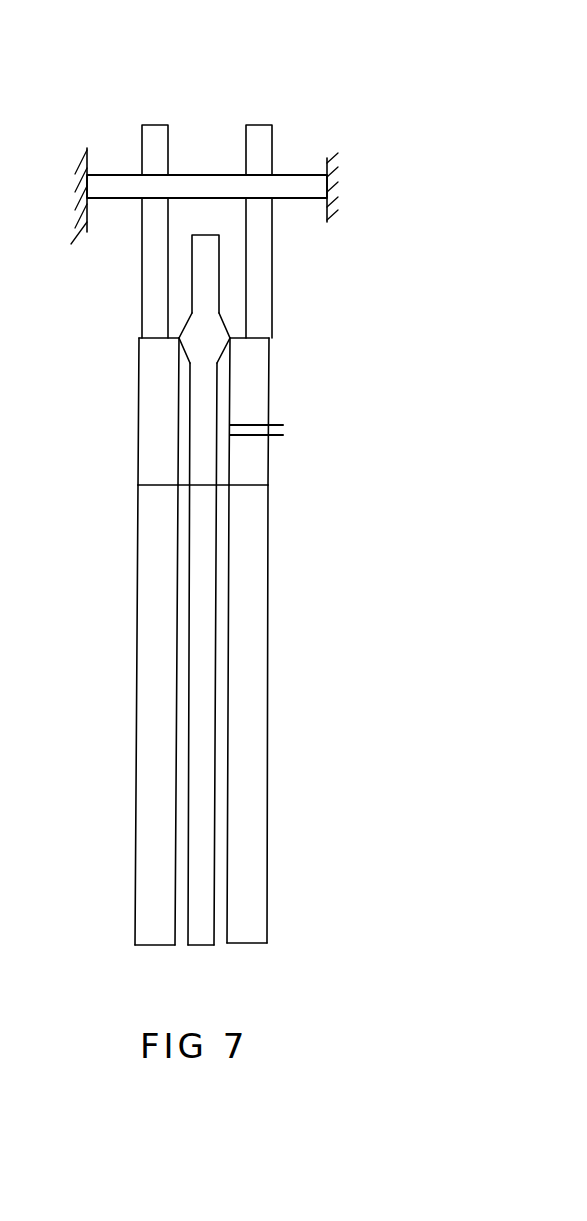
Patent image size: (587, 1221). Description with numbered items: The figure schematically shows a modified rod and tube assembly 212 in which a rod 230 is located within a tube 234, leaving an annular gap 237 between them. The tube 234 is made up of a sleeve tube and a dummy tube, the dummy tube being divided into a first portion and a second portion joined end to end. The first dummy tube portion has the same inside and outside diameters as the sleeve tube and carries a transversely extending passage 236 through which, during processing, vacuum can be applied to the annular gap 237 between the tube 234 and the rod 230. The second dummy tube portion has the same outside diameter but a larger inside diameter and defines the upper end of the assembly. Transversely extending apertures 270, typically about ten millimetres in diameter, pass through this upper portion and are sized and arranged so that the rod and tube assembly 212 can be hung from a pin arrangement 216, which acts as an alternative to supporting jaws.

The rod and tube assembly 212 is at (302, 88).
The pin arrangement 216 is at (106, 175).
The transversely extending apertures 270 is at (148, 175).
The tube 234 is at (267, 641).
The transversely extending passage 236 is at (233, 430).
The annular gap 237 is at (220, 778).
The rod 230 is at (262, 618).